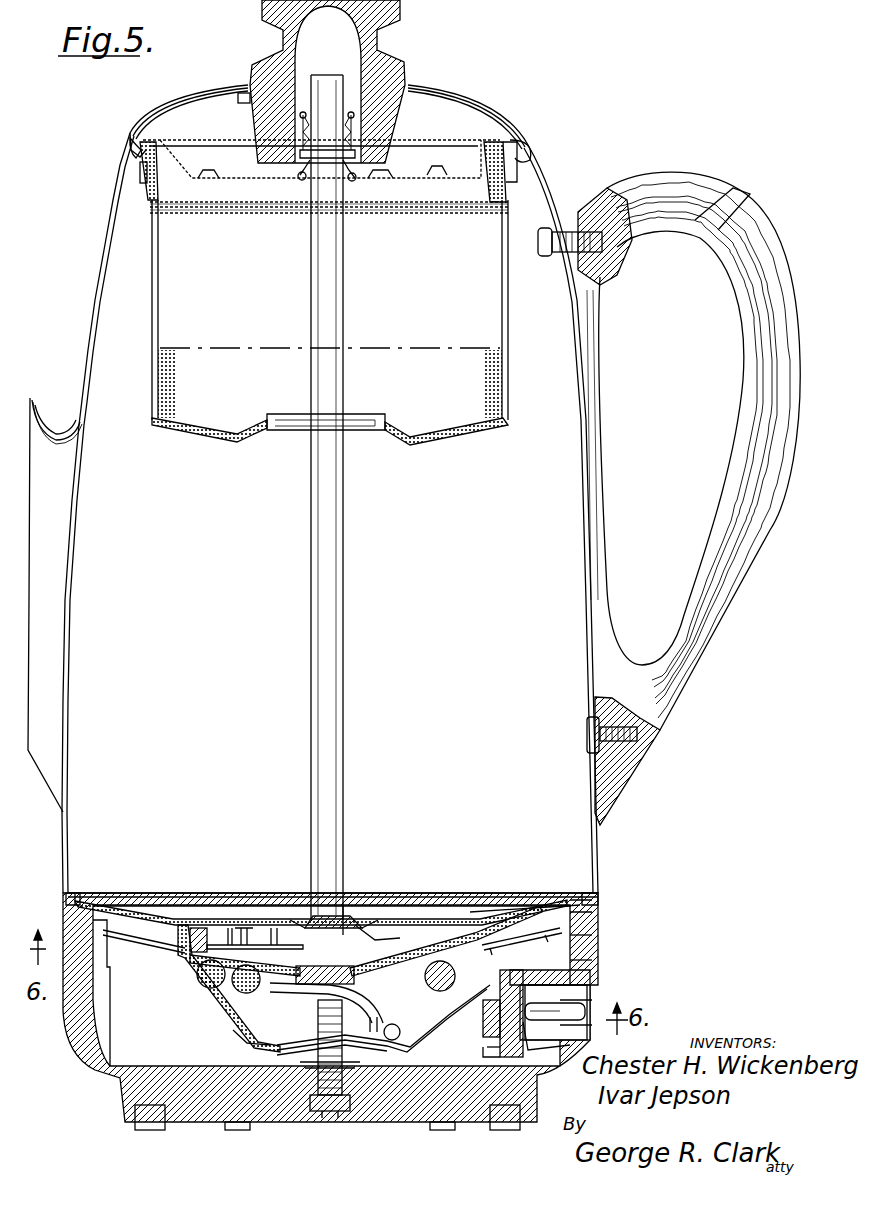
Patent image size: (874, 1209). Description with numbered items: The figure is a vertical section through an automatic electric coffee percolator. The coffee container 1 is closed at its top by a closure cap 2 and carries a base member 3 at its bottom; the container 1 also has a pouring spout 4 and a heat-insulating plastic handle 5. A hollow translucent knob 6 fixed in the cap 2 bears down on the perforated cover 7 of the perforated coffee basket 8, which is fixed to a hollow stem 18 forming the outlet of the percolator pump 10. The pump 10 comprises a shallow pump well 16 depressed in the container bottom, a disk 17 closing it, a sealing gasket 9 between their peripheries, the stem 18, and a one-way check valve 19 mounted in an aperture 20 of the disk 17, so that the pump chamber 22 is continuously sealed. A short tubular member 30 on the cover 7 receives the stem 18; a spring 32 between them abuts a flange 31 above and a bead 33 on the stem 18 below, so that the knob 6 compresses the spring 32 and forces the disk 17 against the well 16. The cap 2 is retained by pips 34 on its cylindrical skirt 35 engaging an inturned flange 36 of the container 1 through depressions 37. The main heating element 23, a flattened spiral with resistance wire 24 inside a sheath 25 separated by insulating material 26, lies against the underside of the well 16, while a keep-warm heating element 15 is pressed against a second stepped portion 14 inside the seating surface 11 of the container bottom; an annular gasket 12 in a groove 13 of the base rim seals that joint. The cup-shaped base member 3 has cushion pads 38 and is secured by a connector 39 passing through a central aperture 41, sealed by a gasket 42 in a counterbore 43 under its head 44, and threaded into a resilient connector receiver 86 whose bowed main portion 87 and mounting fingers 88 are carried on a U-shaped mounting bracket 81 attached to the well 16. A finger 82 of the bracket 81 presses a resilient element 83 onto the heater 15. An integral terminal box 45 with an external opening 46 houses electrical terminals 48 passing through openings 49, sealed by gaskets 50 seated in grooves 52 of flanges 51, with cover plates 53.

The container 1 is at (92, 292).
The closure cap 2 is at (455, 92).
The base member 3 is at (72, 1022).
The pouring spout 4 is at (40, 412).
The handle 5 is at (698, 647).
The knob 6 is at (382, 75).
The perforated cover 7 is at (478, 140).
The perforated coffee basket 8 is at (152, 350).
The sealing gasket 9 is at (478, 942).
The percolator pump 10 is at (365, 920).
The seating surface 11 is at (80, 893).
The annular gasket 12 is at (582, 893).
The groove 13 is at (594, 915).
The second stepped portion 14 is at (140, 902).
The keep-warm heating element 15 is at (594, 932).
The pump well 16 is at (425, 970).
The disk 17 is at (395, 938).
The stem 18 is at (345, 584).
The one-way check valve 19 is at (250, 928).
The aperture 20 is at (538, 1024).
The pump chamber 22 is at (290, 945).
The heating element 23 is at (250, 990).
The resistance wire 24 is at (343, 1003).
The sheath 25 is at (392, 1018).
The electrical insulating material 26 is at (413, 1013).
The tubular member 30 is at (311, 145).
The flange 31 is at (303, 115).
The spring 32 is at (360, 110).
The bead 33 is at (350, 180).
The pips 34 is at (138, 163).
The cylindrical skirt 35 is at (138, 176).
The inturned flange 36 is at (131, 150).
The depressions 37 is at (530, 158).
The cushion pad means 38 is at (150, 1128).
The connector 39 is at (338, 1112).
The aperture 41 is at (318, 1068).
The gasket 42 is at (278, 1100).
The counterbore 43 is at (308, 1118).
The head 44 is at (325, 1120).
The terminal box 45 is at (588, 952).
The external opening 46 is at (590, 995).
The electrical terminals 48 is at (592, 1010).
The openings 49 is at (520, 980).
The gaskets 50 is at (487, 1052).
The flanges 51 is at (482, 1020).
The grooves 52 is at (504, 990).
The cover plates 53 is at (572, 1046).
The mounting bracket 81 is at (212, 992).
The finger 82 is at (145, 980).
The resilient element 83 is at (514, 912).
The resilient connector receiver 86 is at (296, 1034).
The main portion 87 is at (383, 1016).
The mounting fingers 88 is at (240, 1040).